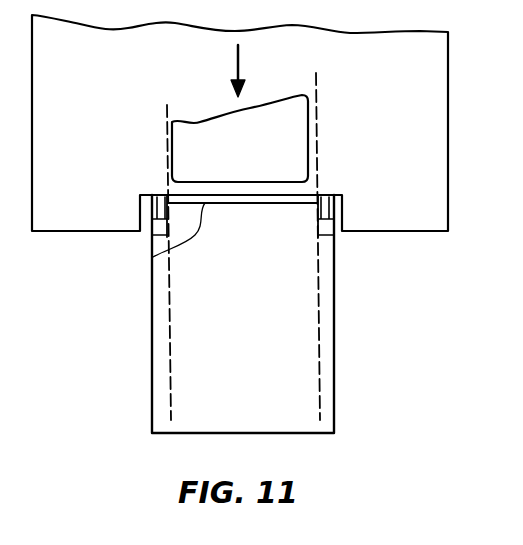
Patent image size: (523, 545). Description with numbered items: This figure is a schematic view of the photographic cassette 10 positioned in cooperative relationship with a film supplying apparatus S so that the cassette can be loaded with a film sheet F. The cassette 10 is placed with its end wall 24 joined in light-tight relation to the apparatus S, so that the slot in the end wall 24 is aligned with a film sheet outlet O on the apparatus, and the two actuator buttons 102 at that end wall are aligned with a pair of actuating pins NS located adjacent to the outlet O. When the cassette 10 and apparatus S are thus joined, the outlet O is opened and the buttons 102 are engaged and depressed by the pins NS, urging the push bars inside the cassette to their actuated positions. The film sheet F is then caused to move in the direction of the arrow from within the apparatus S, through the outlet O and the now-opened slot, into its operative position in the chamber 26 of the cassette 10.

The photographic cassette 10 is at (348, 352).
The end wall 24 is at (228, 203).
The chamber 26 is at (276, 203).
The actuator button 102 is at (152, 237).
The film supplying apparatus S is at (455, 146).
The film sheet F is at (250, 163).
The actuating pins NS is at (346, 176).
The film sheet outlet O is at (213, 203).